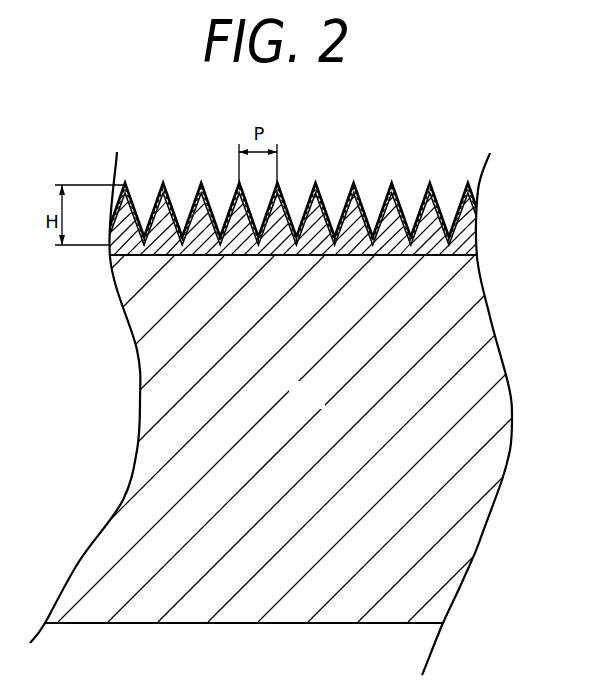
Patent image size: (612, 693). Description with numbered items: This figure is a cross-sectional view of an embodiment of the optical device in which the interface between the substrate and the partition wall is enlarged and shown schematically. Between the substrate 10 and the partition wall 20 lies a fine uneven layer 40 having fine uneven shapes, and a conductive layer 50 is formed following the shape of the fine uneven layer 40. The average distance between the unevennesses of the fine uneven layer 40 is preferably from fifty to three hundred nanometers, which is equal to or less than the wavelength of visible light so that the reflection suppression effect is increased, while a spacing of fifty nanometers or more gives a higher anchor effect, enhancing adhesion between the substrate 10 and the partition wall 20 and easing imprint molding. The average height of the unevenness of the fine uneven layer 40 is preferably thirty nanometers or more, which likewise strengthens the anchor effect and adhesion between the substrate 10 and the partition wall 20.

The substrate 10 is at (322, 407).
The partition wall 20 is at (336, 191).
The fine uneven layer 40 is at (478, 232).
The conductive layer 50 is at (478, 193).